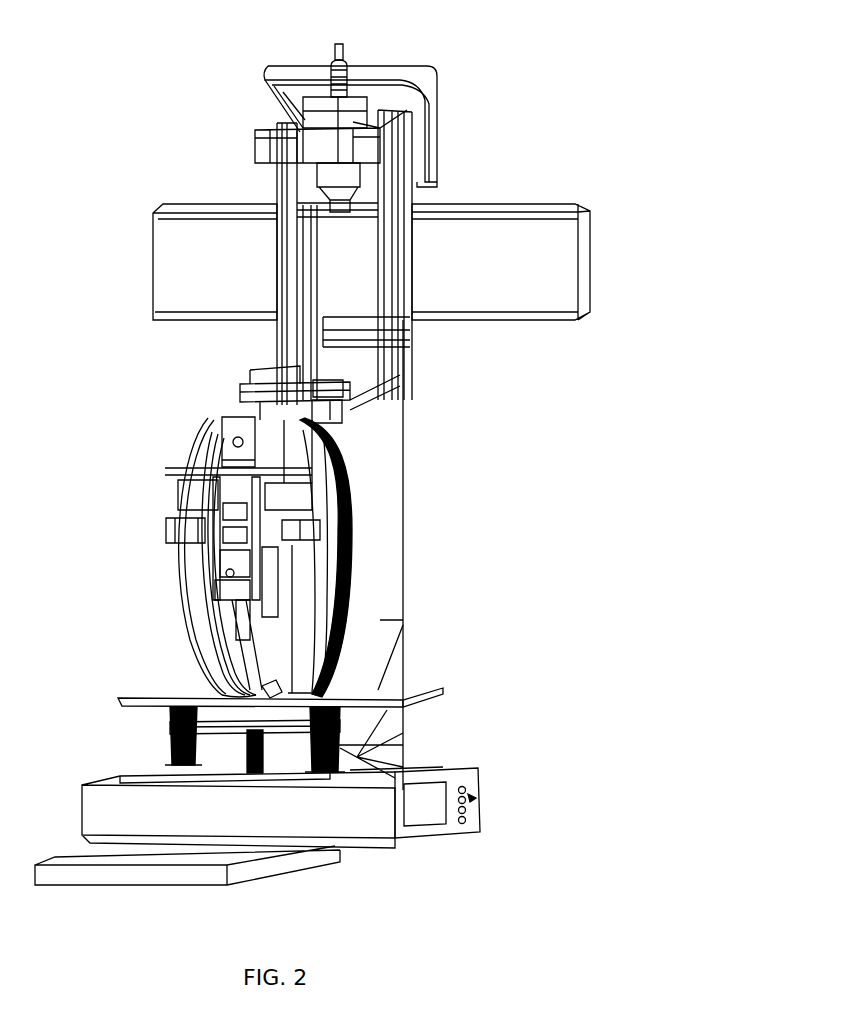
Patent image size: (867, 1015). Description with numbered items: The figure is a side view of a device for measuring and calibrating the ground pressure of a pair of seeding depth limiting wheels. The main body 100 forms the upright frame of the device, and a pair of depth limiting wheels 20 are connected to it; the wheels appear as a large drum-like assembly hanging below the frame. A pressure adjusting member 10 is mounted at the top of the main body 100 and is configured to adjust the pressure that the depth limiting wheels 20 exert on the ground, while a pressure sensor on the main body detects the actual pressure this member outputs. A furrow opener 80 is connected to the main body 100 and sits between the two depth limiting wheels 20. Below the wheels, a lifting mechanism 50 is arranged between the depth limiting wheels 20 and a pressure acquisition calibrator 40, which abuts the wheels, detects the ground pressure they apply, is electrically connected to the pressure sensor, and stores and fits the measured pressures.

The pressure adjusting member 10 is at (341, 50).
The depth limiting wheel 20 is at (193, 585).
The pressure acquisition calibrator 40 is at (362, 812).
The lifting mechanism 50 is at (198, 680).
The furrow opener 80 is at (268, 684).
The main body 100 is at (389, 463).